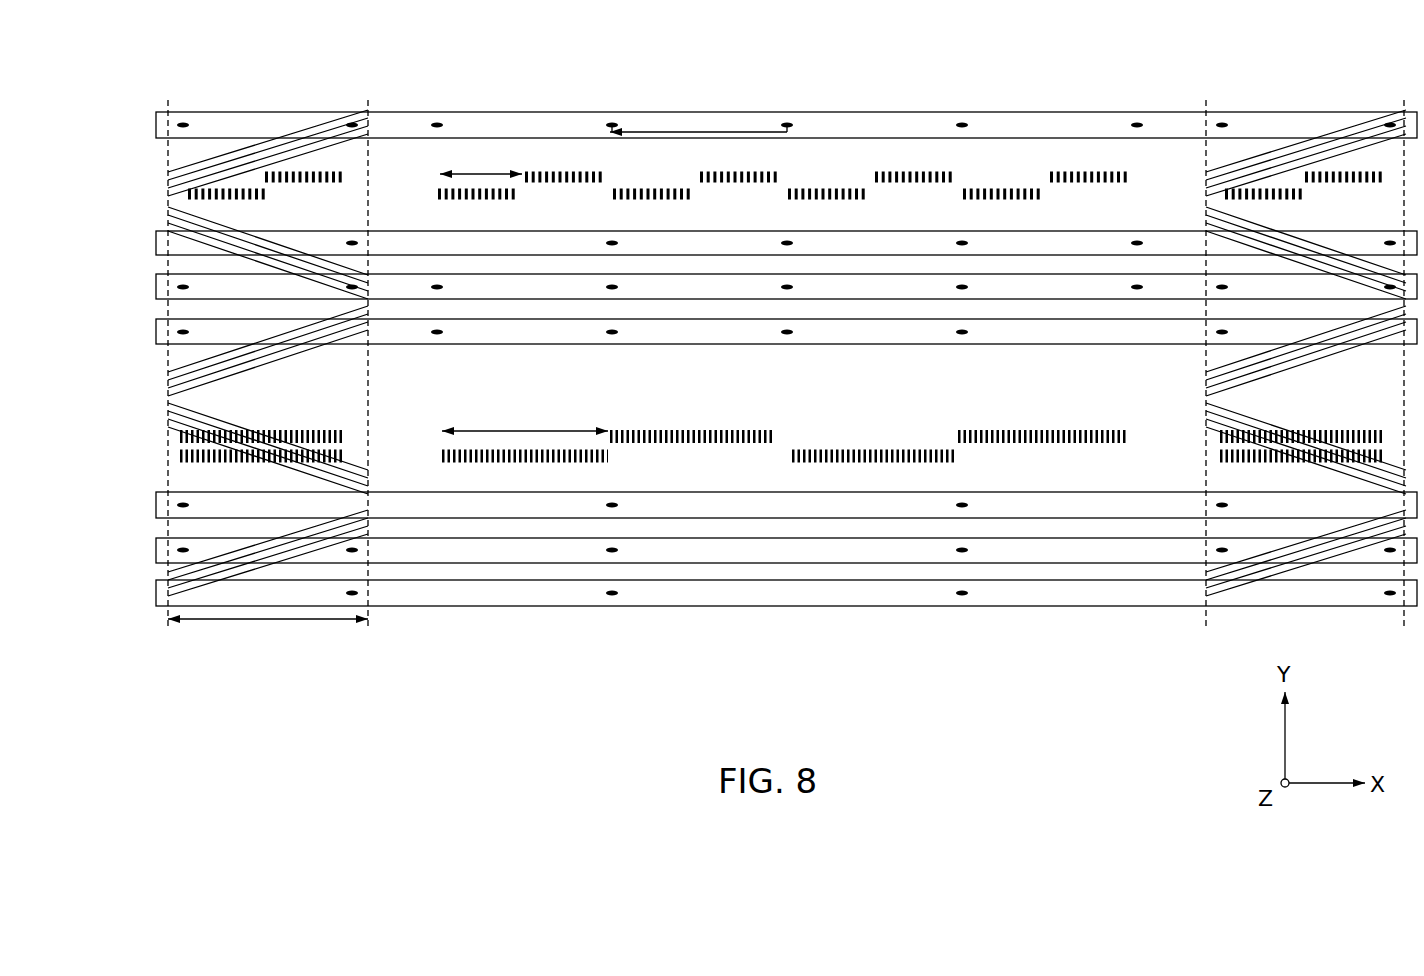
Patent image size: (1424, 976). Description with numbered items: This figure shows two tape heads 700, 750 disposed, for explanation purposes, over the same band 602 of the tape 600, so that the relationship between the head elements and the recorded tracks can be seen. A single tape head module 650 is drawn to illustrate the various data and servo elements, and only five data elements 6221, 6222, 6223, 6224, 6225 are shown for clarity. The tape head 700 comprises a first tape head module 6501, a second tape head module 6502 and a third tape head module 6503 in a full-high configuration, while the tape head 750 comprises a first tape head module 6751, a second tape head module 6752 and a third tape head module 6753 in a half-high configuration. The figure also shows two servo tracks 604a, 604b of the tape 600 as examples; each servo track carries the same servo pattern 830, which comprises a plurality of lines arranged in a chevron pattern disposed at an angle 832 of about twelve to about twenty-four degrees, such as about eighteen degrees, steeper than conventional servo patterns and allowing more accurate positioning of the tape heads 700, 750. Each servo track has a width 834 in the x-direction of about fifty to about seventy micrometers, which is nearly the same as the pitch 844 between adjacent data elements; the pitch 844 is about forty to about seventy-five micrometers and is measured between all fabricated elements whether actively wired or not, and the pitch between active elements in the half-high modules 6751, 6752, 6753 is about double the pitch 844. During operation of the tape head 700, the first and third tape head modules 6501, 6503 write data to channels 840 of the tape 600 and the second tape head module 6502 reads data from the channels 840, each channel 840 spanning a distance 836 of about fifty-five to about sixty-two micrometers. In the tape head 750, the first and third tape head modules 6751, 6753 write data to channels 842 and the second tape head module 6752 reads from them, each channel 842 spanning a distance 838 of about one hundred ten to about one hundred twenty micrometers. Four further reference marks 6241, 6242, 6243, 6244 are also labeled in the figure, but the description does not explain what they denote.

The tape head module 650 is at (155, 125).
The first tape head module 6501 is at (155, 243).
The second tape head module 6502 is at (155, 287).
The third tape head module 6503 is at (155, 332).
The first tape head module 6751 is at (155, 505).
The second tape head module 6752 is at (155, 550).
The third tape head module 6753 is at (155, 593).
The tape head 700 is at (724, 146).
The tape head 750 is at (723, 420).
The data element 6221 is at (446, 205).
The data element 6222 is at (596, 205).
The data element 6223 is at (781, 205).
The data element 6224 is at (948, 205).
The data element 6225 is at (1123, 205).
The segment boundary S1 6241 is at (186, 344).
The segment boundary S2 6242 is at (361, 344).
The segment boundary S3 6243 is at (1223, 344).
The segment boundary S4 6244 is at (1398, 344).
The servo track 604a is at (787, 353).
The servo track 604b is at (1396, 387).
The tape 600 is at (545, 386).
The band 602 is at (720, 386).
The servo pattern 830 is at (258, 362).
The angle 832 is at (200, 380).
The width 834 is at (268, 636).
The distance 836 is at (481, 160).
The distance 838 is at (525, 417).
The channels 840 is at (705, 177).
The channels 842 is at (965, 436).
The pitch 844 is at (703, 131).